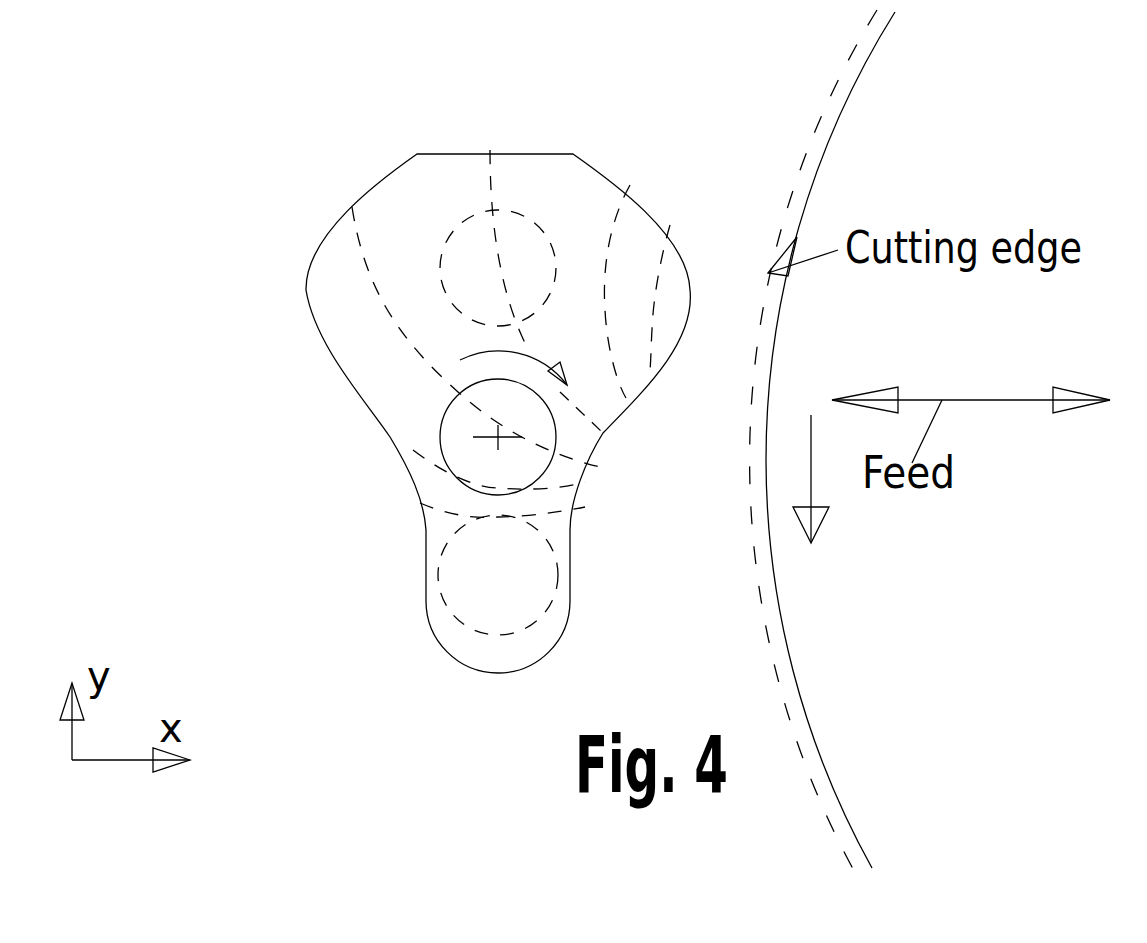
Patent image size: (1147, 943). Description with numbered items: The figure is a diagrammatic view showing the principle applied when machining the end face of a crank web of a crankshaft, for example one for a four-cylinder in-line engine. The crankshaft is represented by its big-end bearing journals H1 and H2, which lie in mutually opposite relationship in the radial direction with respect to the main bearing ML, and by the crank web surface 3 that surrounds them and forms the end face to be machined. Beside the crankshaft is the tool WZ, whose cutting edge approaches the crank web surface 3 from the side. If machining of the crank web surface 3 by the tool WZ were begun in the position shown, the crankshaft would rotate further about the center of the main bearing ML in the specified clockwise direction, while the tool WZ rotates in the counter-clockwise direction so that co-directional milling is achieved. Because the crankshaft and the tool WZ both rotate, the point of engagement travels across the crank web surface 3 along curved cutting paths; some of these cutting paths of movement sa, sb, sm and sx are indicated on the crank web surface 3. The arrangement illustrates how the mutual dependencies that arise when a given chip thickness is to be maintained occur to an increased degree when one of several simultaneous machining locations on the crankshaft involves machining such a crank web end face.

The crank web surface 3 is at (498, 411).
The big-end bearing journal H1 is at (457, 227).
The big-end bearing journal H2 is at (498, 575).
The main bearing ML is at (440, 433).
The cutting path of movement sm is at (365, 258).
The cutting path of movement sb is at (625, 192).
The cutting path of movement sa is at (668, 232).
The cutting path of movement sx is at (437, 513).
The tool WZ is at (787, 652).